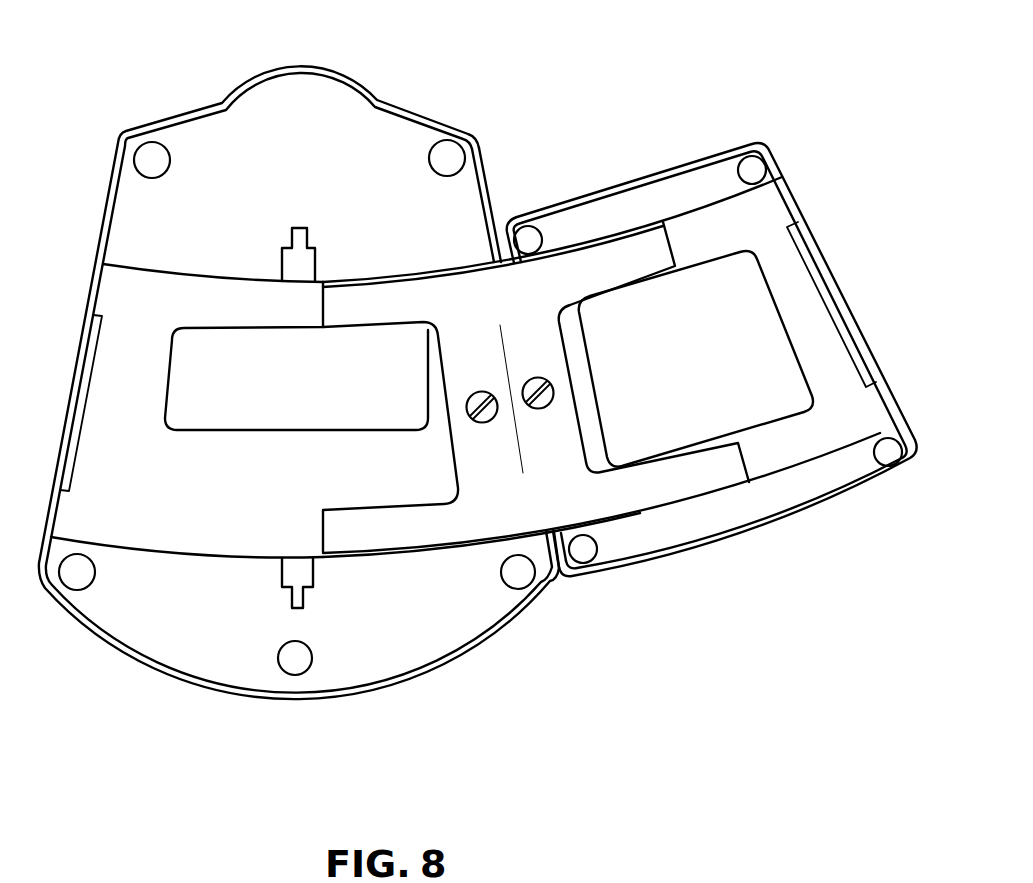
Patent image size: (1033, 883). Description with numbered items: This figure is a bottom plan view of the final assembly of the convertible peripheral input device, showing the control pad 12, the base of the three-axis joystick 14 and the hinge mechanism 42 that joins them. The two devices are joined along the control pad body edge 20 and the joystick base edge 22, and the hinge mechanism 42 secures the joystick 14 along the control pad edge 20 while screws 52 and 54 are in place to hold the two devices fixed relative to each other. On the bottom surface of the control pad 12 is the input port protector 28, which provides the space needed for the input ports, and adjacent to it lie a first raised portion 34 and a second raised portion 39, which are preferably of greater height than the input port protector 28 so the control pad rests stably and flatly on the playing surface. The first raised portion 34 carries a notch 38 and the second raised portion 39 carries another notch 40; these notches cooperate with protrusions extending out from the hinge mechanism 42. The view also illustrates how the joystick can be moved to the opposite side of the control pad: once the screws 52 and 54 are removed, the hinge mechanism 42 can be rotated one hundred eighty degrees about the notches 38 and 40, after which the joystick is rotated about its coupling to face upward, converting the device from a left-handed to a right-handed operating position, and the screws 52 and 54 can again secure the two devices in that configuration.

The control pad 12 is at (337, 110).
The three-axis joystick 14 is at (637, 185).
The control pad body edge 20 is at (487, 168).
The joystick base edge 22 is at (557, 583).
The input port protector 28 is at (275, 391).
The first raised portion 34 is at (249, 177).
The notch 38 is at (315, 260).
The second raised portion 39 is at (408, 621).
The notch 40 is at (313, 573).
The hinge mechanism 42 is at (489, 512).
The screw 52 is at (481, 392).
The screw 54 is at (537, 378).